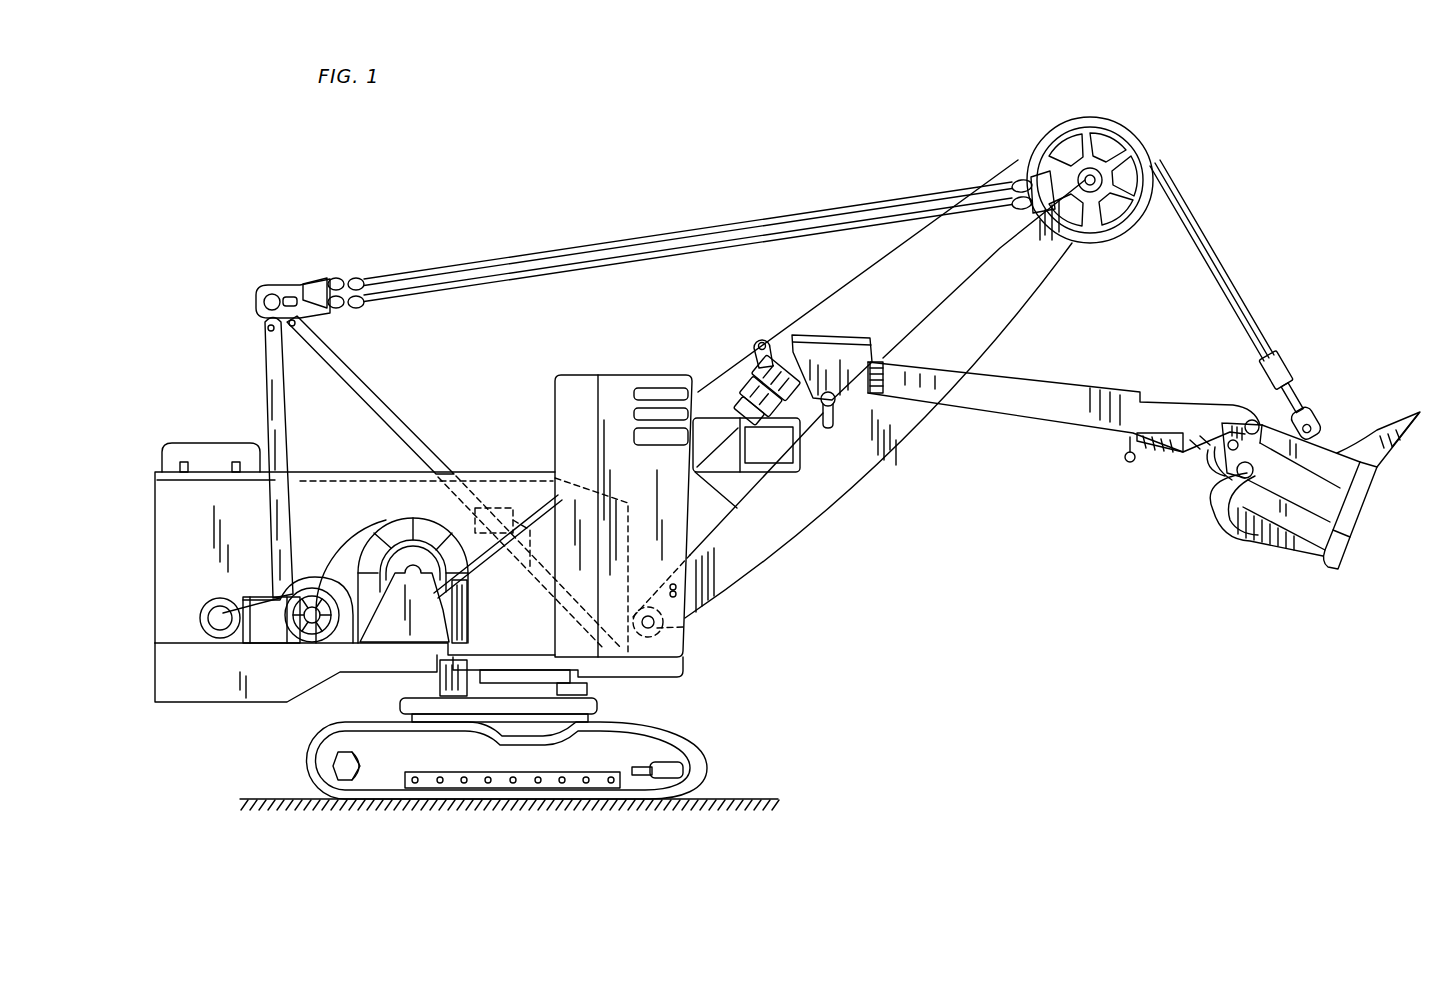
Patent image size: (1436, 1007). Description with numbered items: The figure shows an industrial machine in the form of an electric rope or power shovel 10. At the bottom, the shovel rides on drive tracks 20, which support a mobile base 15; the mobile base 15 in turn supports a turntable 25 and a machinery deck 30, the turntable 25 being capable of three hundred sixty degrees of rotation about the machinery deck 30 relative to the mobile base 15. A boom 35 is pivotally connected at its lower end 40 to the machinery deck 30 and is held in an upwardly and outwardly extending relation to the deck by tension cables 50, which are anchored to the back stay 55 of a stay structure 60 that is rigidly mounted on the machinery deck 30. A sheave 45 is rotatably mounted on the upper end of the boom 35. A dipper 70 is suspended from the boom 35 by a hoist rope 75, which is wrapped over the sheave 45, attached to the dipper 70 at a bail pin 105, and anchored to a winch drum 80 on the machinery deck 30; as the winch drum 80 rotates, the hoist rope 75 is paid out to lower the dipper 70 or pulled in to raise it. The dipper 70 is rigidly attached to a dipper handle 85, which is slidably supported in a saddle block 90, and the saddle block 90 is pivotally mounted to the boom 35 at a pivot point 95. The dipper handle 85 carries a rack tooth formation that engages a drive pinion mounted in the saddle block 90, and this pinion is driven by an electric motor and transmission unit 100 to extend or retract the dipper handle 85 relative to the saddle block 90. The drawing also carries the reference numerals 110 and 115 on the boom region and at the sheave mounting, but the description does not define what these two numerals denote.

The power shovel 10 is at (787, 480).
The mobile base 15 is at (438, 757).
The drive tracks 20 is at (705, 769).
The turntable 25 is at (597, 708).
The machinery deck 30 is at (425, 613).
The boom 35 is at (990, 315).
The lower end 40 is at (655, 626).
The sheave 45 is at (1145, 175).
The tension cables 50 is at (768, 235).
The back stay 55 is at (265, 385).
The stay structure 60 is at (410, 448).
The dipper 70 is at (1363, 528).
The hoist rope 75 is at (1223, 277).
The winch drum 80 is at (400, 515).
The dipper handle 85 is at (993, 397).
The saddle block 90 is at (845, 352).
The pivot point 95 is at (833, 428).
The transmission unit 100 is at (758, 382).
The bail pin 105 is at (1313, 432).
The boom sensor mount 110 is at (700, 583).
The sheave shaft 115 is at (1085, 171).